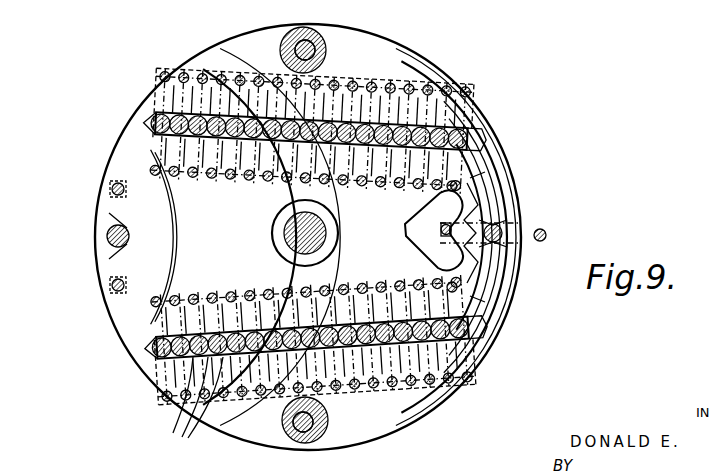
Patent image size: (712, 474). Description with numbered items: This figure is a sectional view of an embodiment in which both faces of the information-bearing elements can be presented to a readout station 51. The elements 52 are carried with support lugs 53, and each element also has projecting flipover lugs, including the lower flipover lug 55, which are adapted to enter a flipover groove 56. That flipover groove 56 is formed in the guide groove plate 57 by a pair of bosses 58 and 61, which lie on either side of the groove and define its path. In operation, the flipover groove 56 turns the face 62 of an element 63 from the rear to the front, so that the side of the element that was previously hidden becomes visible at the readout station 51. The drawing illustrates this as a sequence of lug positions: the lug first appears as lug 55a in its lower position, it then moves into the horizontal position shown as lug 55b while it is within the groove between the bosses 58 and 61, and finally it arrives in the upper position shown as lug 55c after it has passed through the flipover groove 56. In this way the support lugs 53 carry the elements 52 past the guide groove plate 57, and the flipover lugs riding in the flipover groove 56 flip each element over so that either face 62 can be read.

The readout station 51 is at (70, 227).
The elements 52 is at (175, 100).
The support lugs 53 is at (190, 408).
The lower flipover lug 55 is at (490, 215).
The lug in lower position 55a is at (458, 186).
The lug in horizontal position 55b is at (412, 214).
The lug in upper position 55c is at (480, 284).
The flipover groove 56 is at (468, 208).
The guide groove plate 57 is at (382, 48).
The boss 58 is at (422, 242).
The boss 61 is at (482, 255).
The face 62 is at (465, 118).
The element 63 is at (462, 113).